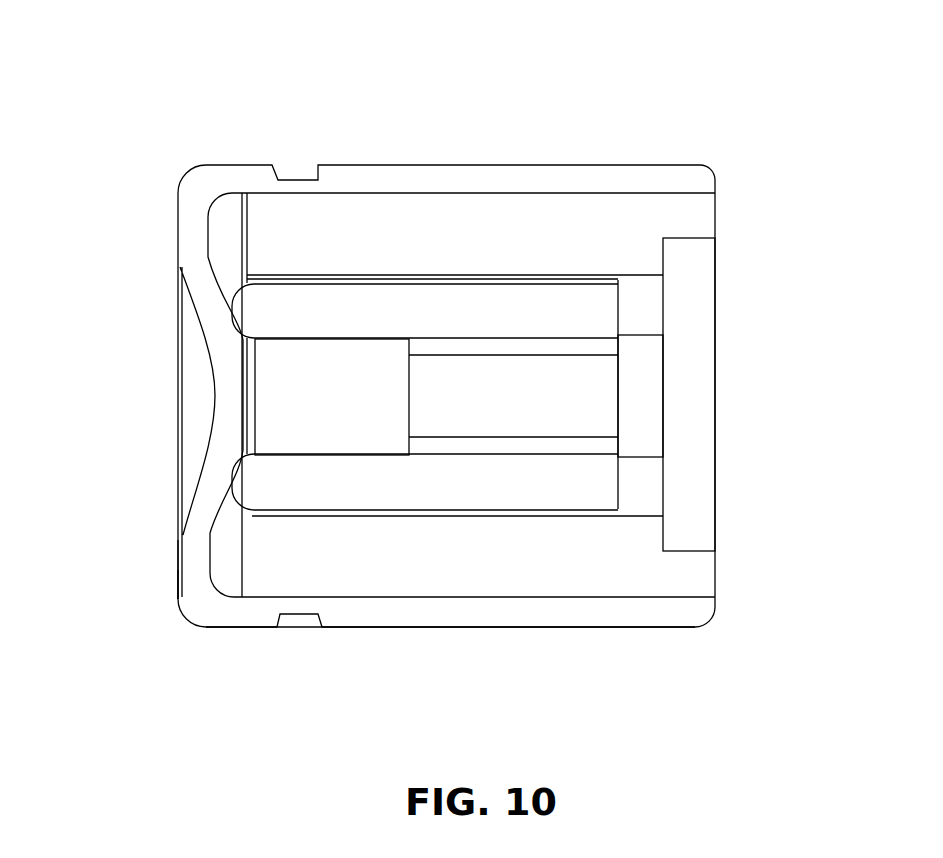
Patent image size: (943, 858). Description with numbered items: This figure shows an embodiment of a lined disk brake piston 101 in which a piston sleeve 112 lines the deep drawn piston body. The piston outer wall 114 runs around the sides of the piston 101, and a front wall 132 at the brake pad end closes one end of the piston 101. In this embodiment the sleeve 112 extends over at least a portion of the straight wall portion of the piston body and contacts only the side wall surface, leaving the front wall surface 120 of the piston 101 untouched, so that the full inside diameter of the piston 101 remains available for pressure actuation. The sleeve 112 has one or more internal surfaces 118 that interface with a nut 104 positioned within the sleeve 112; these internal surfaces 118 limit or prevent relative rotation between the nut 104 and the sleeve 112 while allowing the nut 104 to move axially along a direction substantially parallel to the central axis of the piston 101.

The disk brake piston 101 is at (499, 141).
The piston sleeve 112 is at (577, 225).
The piston outer wall 114 is at (455, 612).
The internal surfaces 118 is at (643, 485).
The front wall 132 is at (223, 363).
The nut 104 is at (260, 483).
The front wall surface 120 is at (200, 600).